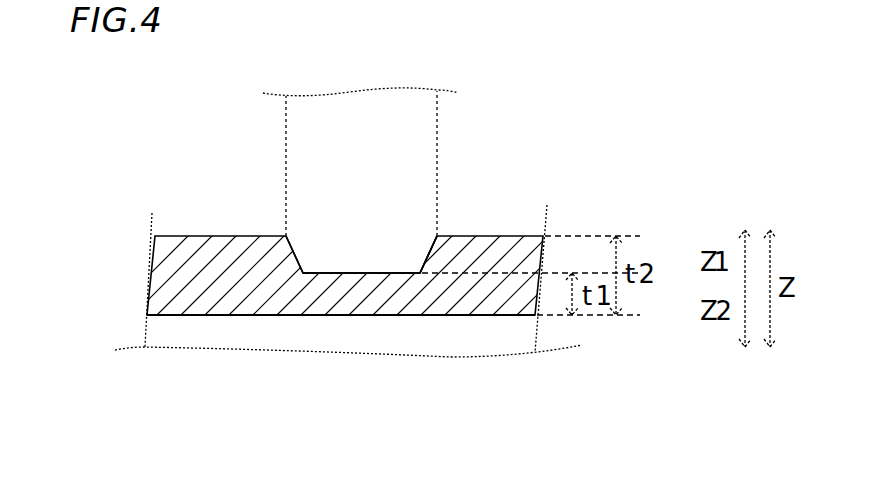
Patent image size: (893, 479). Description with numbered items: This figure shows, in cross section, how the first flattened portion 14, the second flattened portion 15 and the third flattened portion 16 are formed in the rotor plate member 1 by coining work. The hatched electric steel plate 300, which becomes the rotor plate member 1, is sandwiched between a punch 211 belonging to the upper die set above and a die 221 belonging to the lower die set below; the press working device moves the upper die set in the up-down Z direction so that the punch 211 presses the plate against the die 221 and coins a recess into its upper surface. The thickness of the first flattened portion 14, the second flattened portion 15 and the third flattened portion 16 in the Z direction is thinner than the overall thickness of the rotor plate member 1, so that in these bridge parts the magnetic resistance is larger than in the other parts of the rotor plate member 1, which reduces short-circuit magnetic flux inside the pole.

The electric steel plate 300 is at (198, 236).
The rotor plate member 1 is at (322, 260).
The punch 211 is at (300, 130).
The first flattened portion 14 is at (348, 272).
The second flattened portion 15 is at (281, 197).
The third flattened portion 16 is at (320, 197).
The die 221 is at (165, 330).